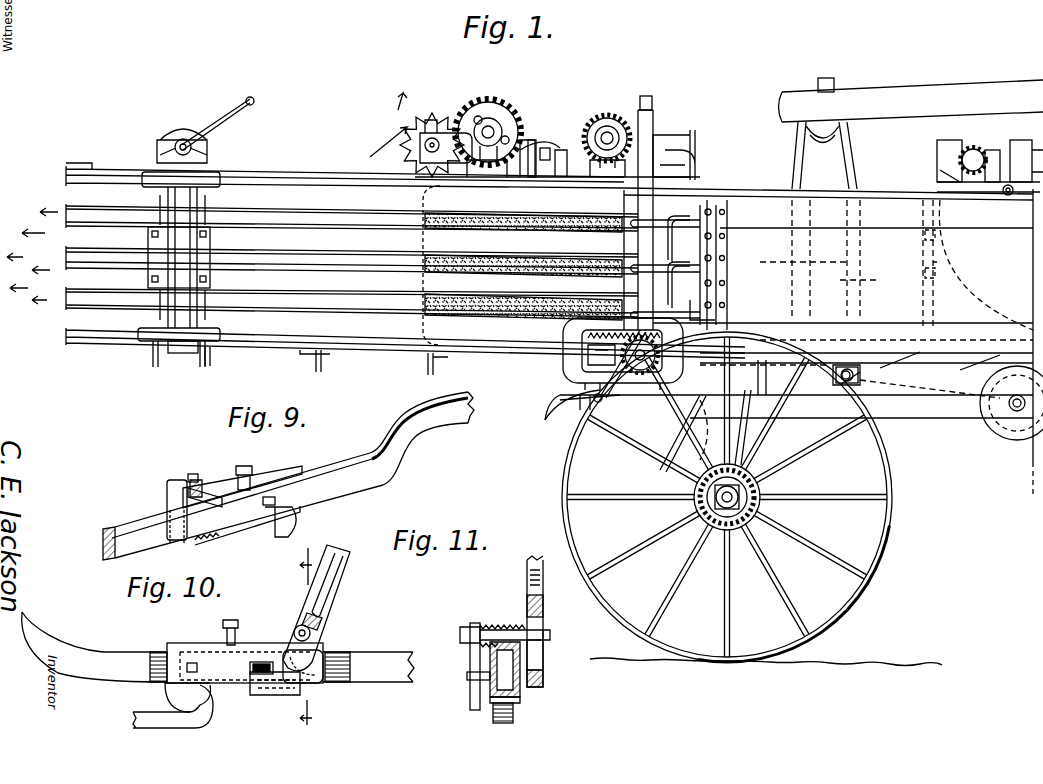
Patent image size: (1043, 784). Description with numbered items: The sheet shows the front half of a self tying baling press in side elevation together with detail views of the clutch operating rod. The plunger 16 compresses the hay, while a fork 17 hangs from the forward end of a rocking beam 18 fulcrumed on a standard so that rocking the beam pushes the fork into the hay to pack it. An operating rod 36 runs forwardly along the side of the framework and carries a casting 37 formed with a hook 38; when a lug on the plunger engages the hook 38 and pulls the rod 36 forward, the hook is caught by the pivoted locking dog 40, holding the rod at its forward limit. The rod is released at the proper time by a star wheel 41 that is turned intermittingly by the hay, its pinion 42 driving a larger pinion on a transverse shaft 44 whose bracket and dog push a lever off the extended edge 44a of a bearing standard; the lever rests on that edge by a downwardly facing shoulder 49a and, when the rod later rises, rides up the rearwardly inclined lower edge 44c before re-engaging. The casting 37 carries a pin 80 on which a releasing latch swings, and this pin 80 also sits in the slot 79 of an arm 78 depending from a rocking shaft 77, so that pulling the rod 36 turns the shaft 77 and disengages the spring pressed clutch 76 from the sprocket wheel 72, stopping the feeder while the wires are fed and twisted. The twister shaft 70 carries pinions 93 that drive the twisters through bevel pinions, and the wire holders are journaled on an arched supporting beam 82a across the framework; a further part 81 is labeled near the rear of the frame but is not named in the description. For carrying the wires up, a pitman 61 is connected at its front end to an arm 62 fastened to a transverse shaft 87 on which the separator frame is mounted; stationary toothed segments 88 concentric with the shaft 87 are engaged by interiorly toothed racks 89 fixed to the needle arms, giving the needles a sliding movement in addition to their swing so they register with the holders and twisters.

In FIG. 1, the plunger 16 is at (927, 255).
In FIG. 1, the fork 17 is at (853, 186).
In FIG. 1, the rocking beam 18 is at (950, 98).
In FIG. 9, the operating rod 36 is at (378, 482).
In FIG. 10, the operating rod 36 is at (98, 652).
In FIG. 11, the operating rod 36 is at (492, 702).
In FIG. 9, the casting 37 is at (166, 502).
In FIG. 10, the casting 37 is at (210, 650).
In FIG. 11, the casting 37 is at (521, 699).
In FIG. 9, the hook 38 is at (281, 530).
In FIG. 10, the hook 38 is at (165, 700).
In FIG. 11, the hook 38 is at (514, 718).
In FIG. 10, the pivoted locking dog 40 is at (170, 728).
In FIG. 1, the star wheel 41 is at (398, 142).
In FIG. 1, the pinion 42 is at (440, 126).
In FIG. 1, the transverse shaft 44 is at (492, 128).
In FIG. 1, the extended edge of bearing standard 44a is at (508, 142).
In FIG. 1, the rearwardly inclined lower edge 44c is at (547, 157).
In FIG. 1, the downwardly facing shoulder 49a is at (525, 150).
In FIG. 1, the pitman 61 is at (972, 407).
In FIG. 1, the arm 62 is at (585, 400).
In FIG. 1, the twister shaft 70 is at (646, 118).
In FIG. 1, the sprocket wheel 72 is at (974, 147).
In FIG. 1, the spring pressed clutch 76 is at (1000, 150).
In FIG. 1, the rocking shaft 77 is at (536, 150).
In FIG. 10, the arm 78 is at (345, 592).
In FIG. 11, the arm 78 is at (542, 612).
In FIG. 10, the slot 79 is at (318, 630).
In FIG. 11, the slot 79 is at (542, 660).
In FIG. 9, the pin 80 is at (212, 494).
In FIG. 10, the pin 80 is at (320, 638).
In FIG. 11, the pin 80 is at (545, 635).
In FIG. 1, the bracket 81 is at (868, 384).
In FIG. 1, the arched supporting beam 82a is at (660, 140).
In FIG. 1, the transverse shaft 87 is at (645, 372).
In FIG. 1, the toothed segments 88 is at (647, 335).
In FIG. 1, the interiorly toothed racks 89 is at (588, 352).
In FIG. 1, the pinions 93 is at (612, 135).